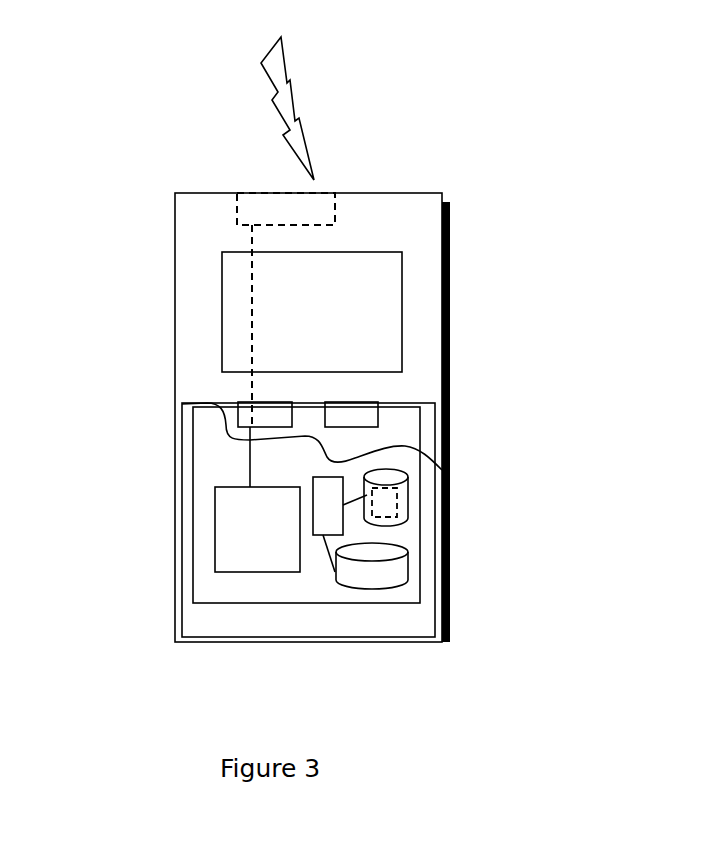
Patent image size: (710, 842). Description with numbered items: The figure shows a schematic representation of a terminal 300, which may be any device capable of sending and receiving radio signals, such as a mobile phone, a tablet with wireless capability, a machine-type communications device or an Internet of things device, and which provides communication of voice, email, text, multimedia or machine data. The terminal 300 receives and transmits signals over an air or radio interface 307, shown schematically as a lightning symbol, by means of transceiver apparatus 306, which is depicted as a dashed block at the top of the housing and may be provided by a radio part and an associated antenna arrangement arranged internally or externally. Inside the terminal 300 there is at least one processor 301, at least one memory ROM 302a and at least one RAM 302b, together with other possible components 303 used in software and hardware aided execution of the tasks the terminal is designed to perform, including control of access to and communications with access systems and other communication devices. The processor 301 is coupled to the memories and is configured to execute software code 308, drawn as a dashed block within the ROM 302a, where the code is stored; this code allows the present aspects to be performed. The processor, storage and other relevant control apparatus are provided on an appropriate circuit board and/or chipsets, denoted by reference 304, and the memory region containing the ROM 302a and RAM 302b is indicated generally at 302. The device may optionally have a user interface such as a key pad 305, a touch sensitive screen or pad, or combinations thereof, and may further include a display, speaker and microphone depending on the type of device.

The terminal 300 is at (175, 230).
The processor 301 is at (328, 492).
The battery compartment 302 is at (215, 590).
The memory ROM 302a is at (410, 503).
The RAM 302b is at (377, 565).
The other possible components 303 is at (230, 410).
The circuit board and/or chipsets 304 is at (222, 515).
The key pad 305 is at (235, 300).
The transceiver apparatus 306 is at (327, 207).
The air or radio interface 307 is at (314, 133).
The software code 308 is at (383, 500).